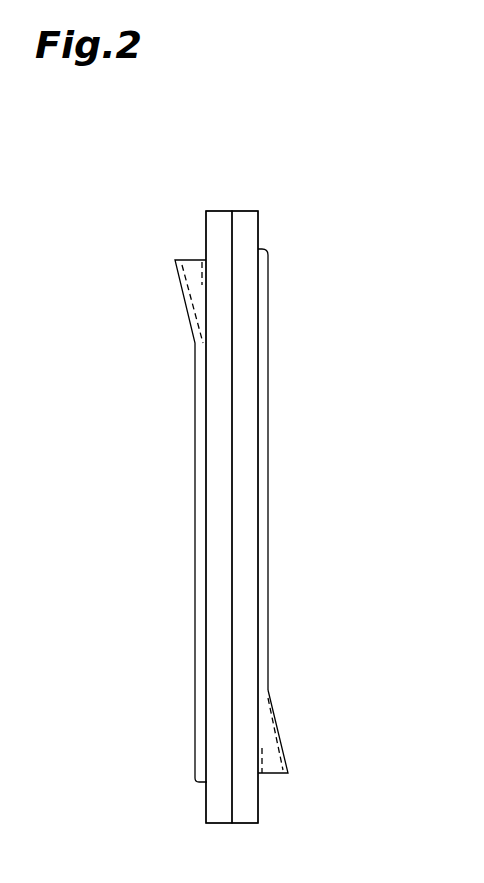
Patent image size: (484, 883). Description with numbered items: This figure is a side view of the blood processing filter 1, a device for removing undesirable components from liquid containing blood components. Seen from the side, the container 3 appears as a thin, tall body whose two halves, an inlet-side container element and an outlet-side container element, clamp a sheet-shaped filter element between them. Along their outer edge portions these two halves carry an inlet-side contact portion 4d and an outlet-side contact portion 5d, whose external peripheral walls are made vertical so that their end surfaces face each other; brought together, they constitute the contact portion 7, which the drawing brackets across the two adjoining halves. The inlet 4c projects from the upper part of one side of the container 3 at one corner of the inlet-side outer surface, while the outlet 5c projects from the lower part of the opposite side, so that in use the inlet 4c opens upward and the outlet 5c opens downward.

The blood processing filter 1 is at (380, 235).
The container 3 is at (268, 492).
The inlet 4c is at (191, 258).
The inlet-side contact portion 4d is at (206, 228).
The outlet 5c is at (272, 775).
The outlet-side contact portion 5d is at (258, 228).
The contact portion 7 is at (182, 150).